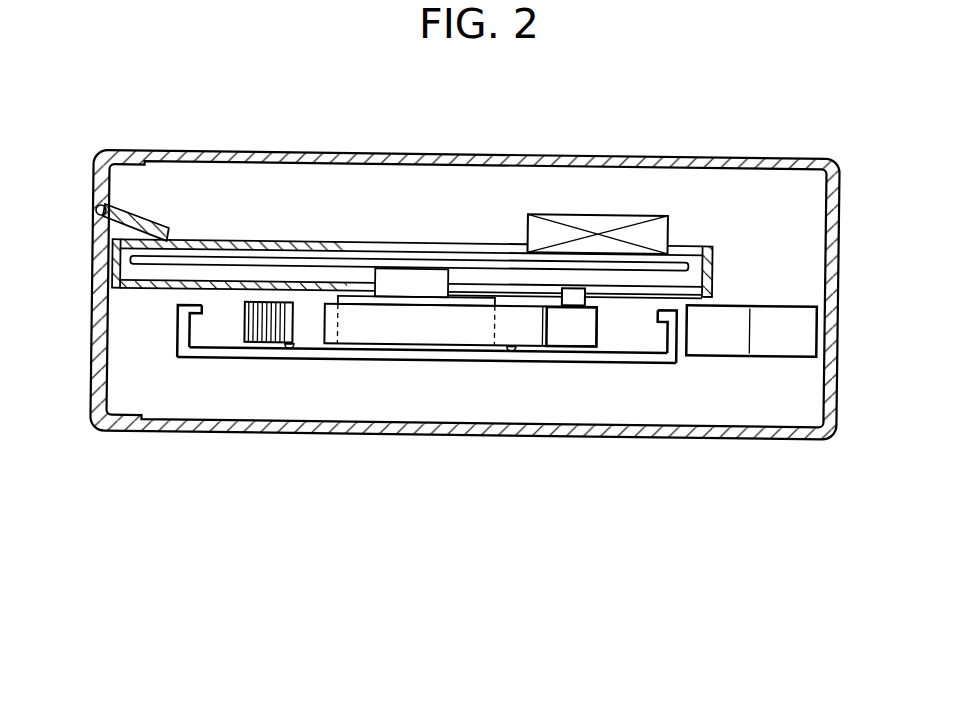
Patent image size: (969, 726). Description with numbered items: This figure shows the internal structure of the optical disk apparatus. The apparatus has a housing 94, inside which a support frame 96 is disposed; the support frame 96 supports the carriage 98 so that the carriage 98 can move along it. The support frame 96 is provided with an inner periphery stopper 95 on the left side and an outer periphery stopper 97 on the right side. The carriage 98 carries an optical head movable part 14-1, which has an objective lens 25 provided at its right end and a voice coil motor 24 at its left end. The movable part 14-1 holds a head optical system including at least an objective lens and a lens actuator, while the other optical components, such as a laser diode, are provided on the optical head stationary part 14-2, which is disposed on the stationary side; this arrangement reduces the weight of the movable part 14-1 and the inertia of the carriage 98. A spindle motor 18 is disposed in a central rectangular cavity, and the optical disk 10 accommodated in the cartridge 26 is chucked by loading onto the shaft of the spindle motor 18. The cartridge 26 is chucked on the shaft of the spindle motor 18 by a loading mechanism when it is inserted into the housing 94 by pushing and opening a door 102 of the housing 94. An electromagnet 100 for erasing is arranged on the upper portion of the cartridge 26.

The housing 94 is at (404, 154).
The door 102 is at (100, 218).
The cartridge 26 is at (219, 244).
The optical disk 10 is at (477, 268).
The electromagnet 100 is at (586, 214).
The objective lens 25 is at (580, 286).
The carriage 98 is at (450, 333).
The optical head movable part 14-1 is at (565, 334).
The optical head stationary part 14-2 is at (790, 302).
The voice coil motor 24 is at (268, 345).
The spindle motor 18 is at (405, 351).
The support frame 96 is at (350, 361).
The inner periphery stopper 95 is at (203, 313).
The outer periphery stopper 97 is at (653, 318).